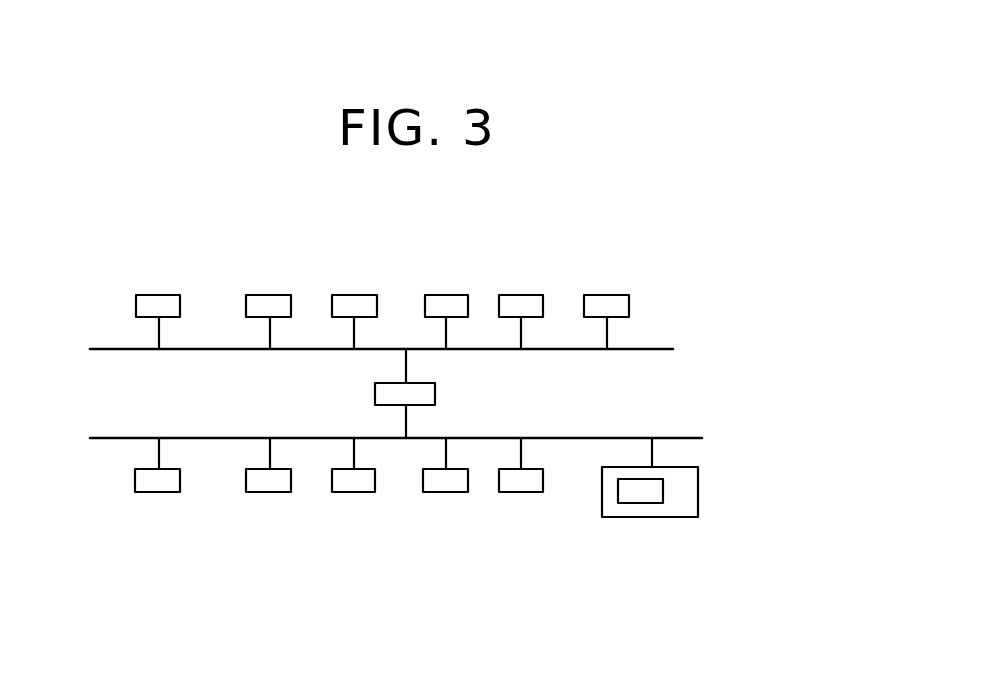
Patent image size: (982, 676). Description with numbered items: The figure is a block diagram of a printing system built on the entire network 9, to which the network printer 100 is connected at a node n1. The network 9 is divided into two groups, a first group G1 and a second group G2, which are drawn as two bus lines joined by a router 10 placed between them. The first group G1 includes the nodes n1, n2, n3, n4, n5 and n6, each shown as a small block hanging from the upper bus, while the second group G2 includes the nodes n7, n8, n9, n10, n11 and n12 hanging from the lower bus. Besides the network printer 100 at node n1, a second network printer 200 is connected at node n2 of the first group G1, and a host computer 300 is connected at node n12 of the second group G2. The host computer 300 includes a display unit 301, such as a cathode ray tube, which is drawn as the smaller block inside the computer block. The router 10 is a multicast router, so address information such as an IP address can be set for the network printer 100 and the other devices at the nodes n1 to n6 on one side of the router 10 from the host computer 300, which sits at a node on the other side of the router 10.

The node n1 is at (191, 297).
The network printer 100 is at (160, 303).
The node n2 is at (297, 300).
The network printer 200 is at (276, 305).
The node n3 is at (363, 305).
The node n4 is at (450, 300).
The node n5 is at (528, 298).
The node n6 is at (615, 302).
The node n7 is at (154, 485).
The node n8 is at (270, 485).
The node n9 is at (356, 485).
The node n10 is at (445, 485).
The node n11 is at (523, 485).
The node n12 is at (707, 514).
The host computer 300 is at (707, 514).
The display unit 301 is at (628, 503).
The network 9 is at (623, 349).
The router 10 is at (435, 395).
The first group G1 is at (207, 243).
The second group G2 is at (122, 540).